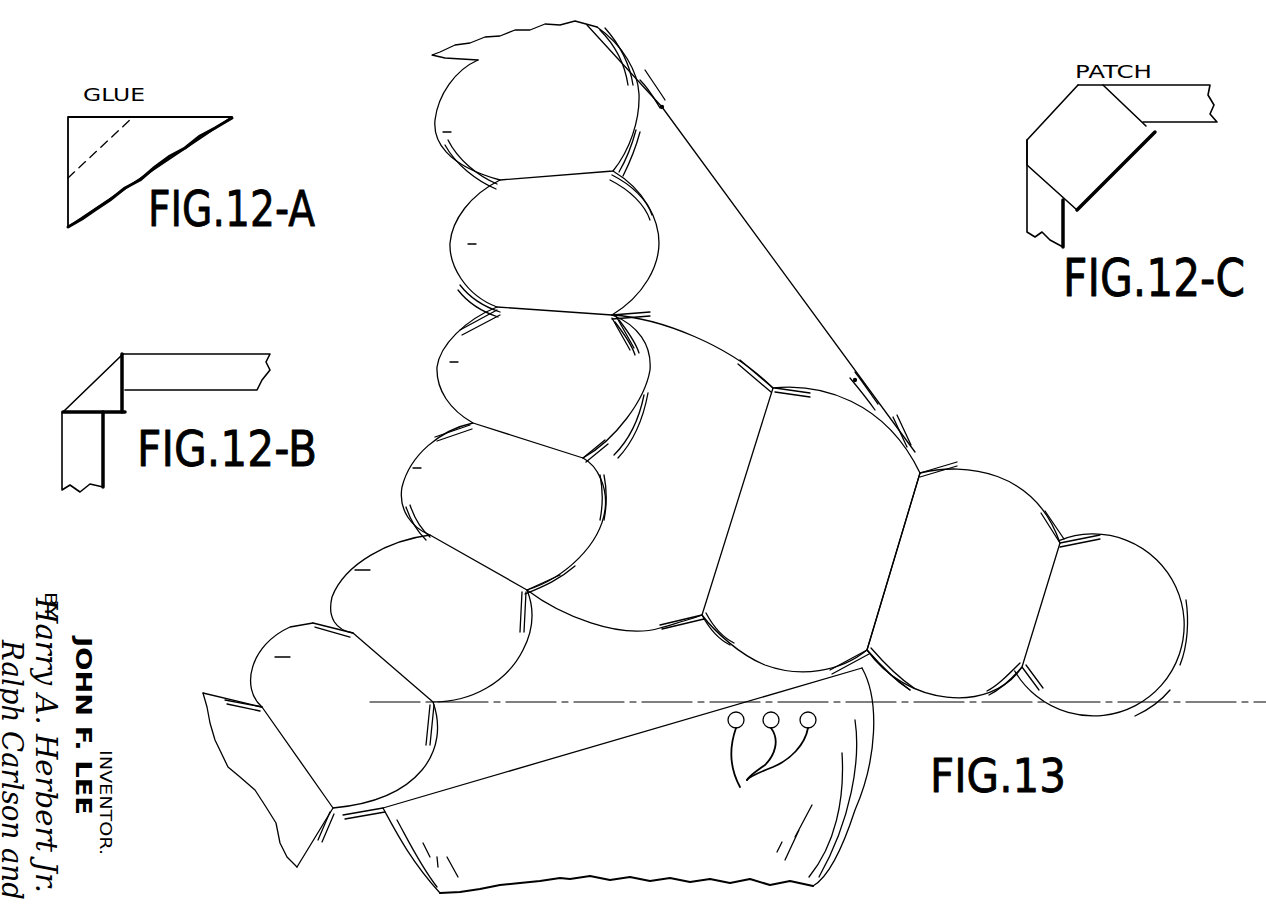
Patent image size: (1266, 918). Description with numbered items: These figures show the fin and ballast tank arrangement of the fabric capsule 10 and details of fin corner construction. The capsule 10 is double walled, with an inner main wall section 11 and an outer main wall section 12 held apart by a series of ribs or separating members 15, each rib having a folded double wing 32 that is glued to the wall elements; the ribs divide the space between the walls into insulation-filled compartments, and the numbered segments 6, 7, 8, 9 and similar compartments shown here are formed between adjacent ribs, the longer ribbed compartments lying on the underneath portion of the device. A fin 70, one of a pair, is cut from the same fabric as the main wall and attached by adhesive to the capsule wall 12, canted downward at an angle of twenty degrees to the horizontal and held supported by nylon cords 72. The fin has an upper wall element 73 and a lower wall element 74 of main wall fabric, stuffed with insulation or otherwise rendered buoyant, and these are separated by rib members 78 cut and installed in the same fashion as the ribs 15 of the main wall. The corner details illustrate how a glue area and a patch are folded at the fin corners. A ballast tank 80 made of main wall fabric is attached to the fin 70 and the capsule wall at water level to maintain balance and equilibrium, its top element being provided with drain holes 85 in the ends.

The compartment or segment 6 is at (536, 105).
The compartment or segment 7 is at (554, 245).
The compartment or segment 8 is at (543, 382).
The compartment or segment 9 is at (504, 527).
The capsule 10 is at (422, 640).
The inner main wall section 11 is at (442, 145).
The outer main wall section 12 is at (636, 122).
The ribs or separating members 15 is at (554, 177).
The double wing 32 is at (452, 252).
The fin 70 is at (988, 454).
The nylon cords 72 is at (786, 276).
The upper wall element 73 is at (1035, 500).
The lower wall element 74 is at (938, 703).
The separating rib members 78 is at (728, 538).
The ballast tank 80 is at (611, 833).
The drain holes 85 is at (772, 772).